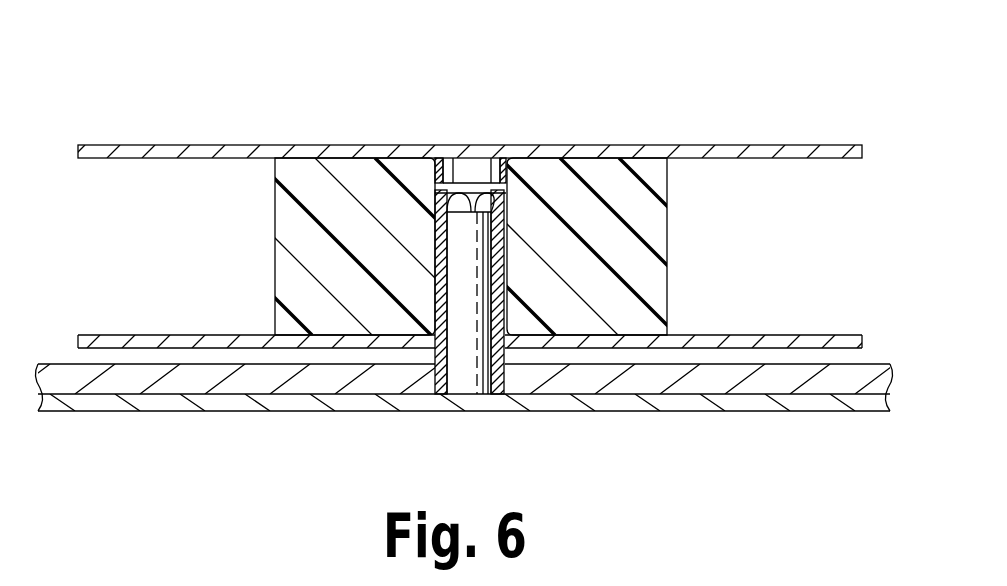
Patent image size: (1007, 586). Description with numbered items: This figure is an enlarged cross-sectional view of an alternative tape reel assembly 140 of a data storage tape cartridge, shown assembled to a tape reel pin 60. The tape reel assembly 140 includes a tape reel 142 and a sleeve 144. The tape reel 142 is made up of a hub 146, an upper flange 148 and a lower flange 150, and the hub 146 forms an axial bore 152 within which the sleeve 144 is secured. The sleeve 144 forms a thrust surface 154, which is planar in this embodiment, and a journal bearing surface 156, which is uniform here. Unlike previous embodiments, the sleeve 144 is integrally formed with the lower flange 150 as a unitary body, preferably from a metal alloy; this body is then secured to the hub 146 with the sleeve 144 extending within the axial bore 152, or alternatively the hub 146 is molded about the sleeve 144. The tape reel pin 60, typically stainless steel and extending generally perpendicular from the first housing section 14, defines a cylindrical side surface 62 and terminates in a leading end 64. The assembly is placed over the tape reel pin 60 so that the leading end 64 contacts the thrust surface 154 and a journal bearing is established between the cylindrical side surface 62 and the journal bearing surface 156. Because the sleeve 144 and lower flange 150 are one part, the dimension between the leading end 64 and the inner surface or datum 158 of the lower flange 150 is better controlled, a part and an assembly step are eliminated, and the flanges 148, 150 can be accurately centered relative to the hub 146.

The tape reel assembly 140 is at (168, 55).
The upper flange 148 is at (205, 145).
The lower flange 150 is at (110, 338).
The datum 158 is at (708, 337).
The first housing section 14 is at (178, 405).
The hub 146 is at (290, 216).
The sleeve 144 is at (512, 261).
The tape reel 142 is at (212, 250).
The axial bore 152 is at (437, 186).
The thrust surface 154 is at (481, 190).
The leading end 64 is at (462, 188).
The tape reel pin 60 is at (468, 386).
The cylindrical side surface 62 is at (442, 352).
The journal bearing surface 156 is at (457, 318).